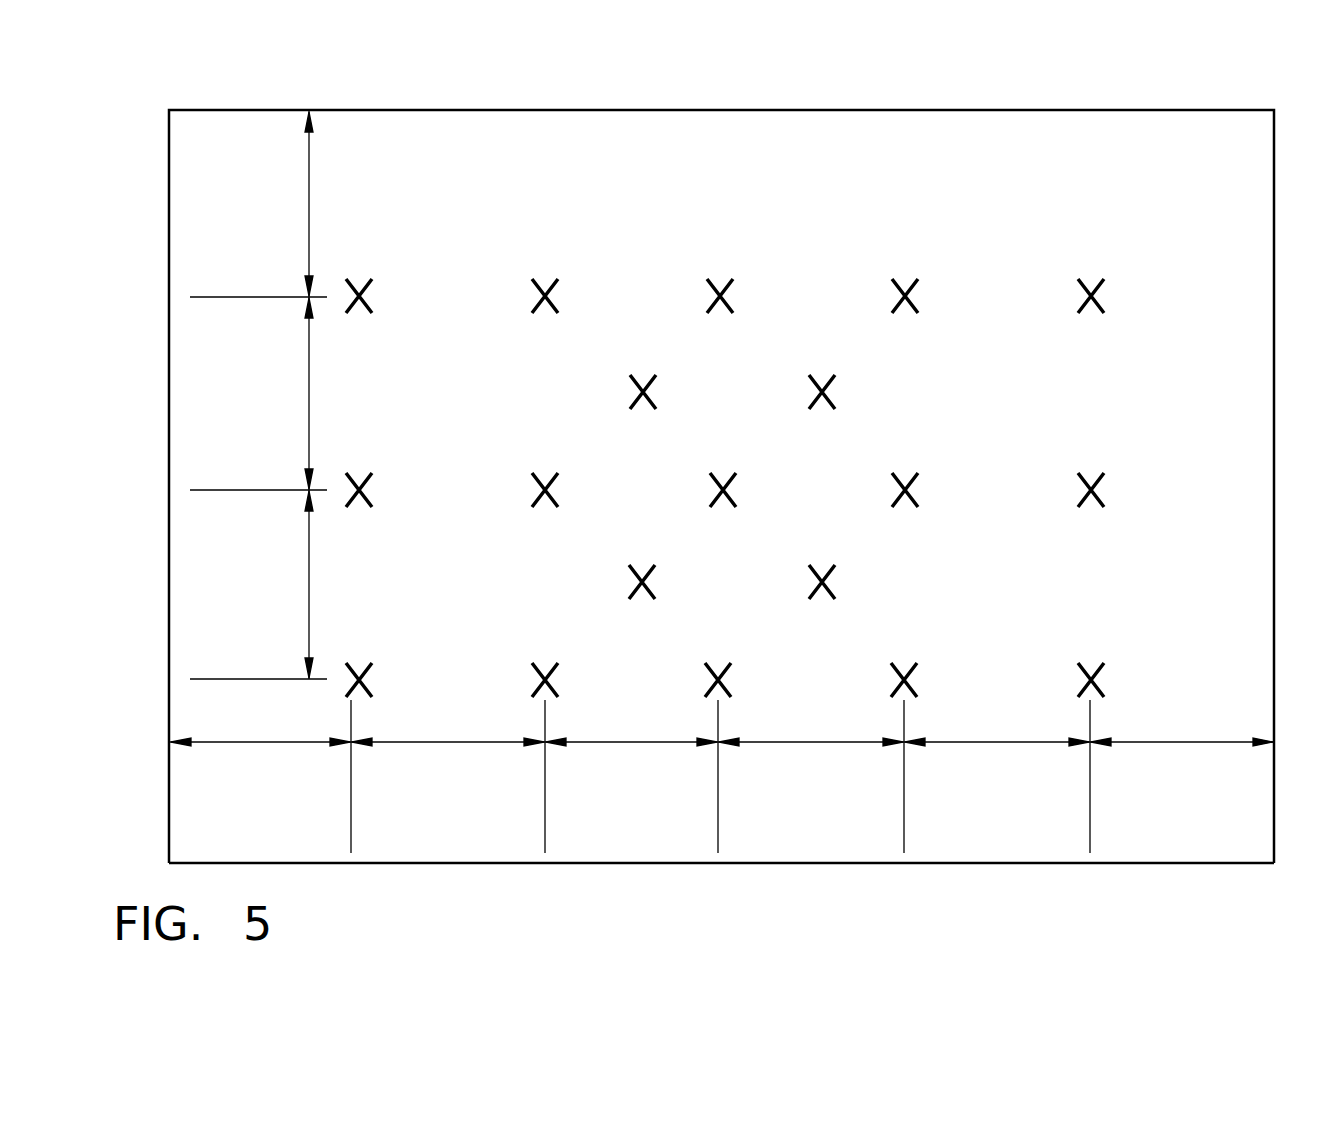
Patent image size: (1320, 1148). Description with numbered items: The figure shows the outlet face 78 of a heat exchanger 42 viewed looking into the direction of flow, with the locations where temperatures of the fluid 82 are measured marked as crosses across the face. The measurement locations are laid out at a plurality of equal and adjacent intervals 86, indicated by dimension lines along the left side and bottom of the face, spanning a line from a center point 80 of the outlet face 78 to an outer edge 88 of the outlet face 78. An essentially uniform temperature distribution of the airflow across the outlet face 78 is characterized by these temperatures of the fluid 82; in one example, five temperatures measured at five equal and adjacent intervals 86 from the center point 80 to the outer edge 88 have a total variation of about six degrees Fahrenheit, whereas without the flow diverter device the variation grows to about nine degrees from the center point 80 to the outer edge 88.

The heat exchanger 42 is at (721, 475).
The outlet face 78 is at (688, 189).
The center point 80 is at (732, 482).
The temperatures of the fluid 82 is at (368, 288).
The equal and adjacent intervals 86 is at (309, 197).
The outer edge 88 is at (620, 865).